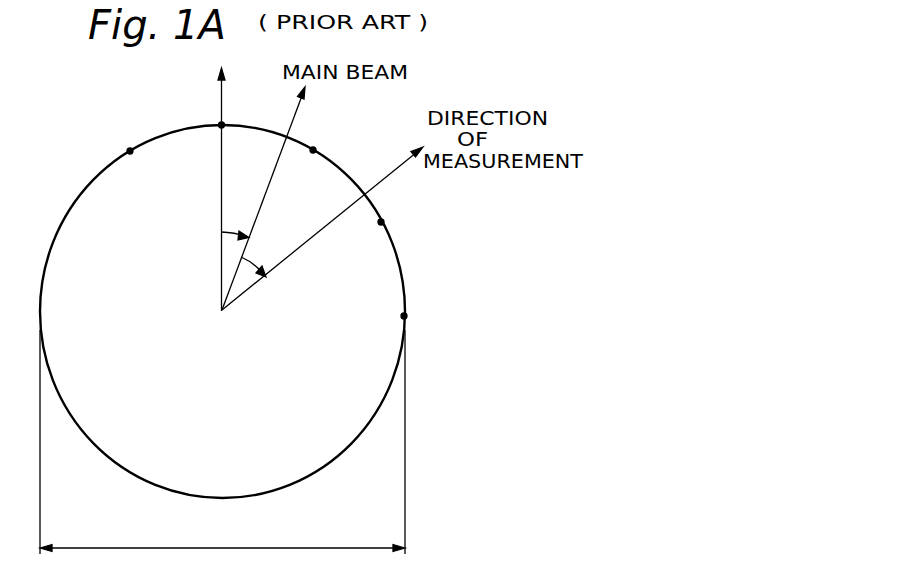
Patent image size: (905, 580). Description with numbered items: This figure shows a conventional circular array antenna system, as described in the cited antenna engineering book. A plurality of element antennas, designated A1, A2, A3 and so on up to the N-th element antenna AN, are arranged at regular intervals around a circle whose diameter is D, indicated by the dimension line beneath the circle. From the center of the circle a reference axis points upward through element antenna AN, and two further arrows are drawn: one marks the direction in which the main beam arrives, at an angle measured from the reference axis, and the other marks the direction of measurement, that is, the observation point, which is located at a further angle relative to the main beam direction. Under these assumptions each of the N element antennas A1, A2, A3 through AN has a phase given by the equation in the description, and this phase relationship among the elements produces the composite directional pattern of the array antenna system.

The element antenna AN is at (221, 125).
The element antenna A1 is at (313, 150).
The element antenna A2 is at (381, 222).
The element antenna A3 is at (404, 316).
The diameter D is at (222, 442).